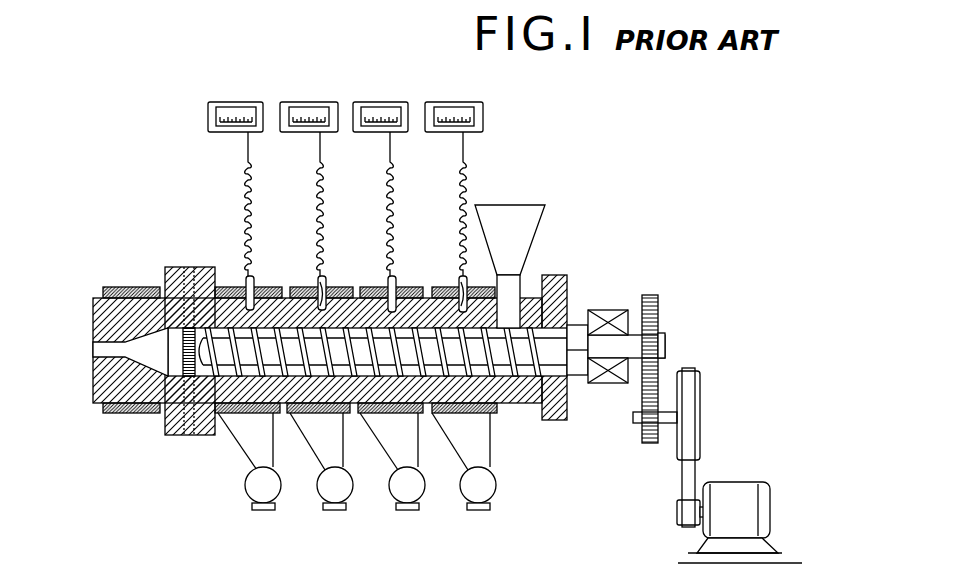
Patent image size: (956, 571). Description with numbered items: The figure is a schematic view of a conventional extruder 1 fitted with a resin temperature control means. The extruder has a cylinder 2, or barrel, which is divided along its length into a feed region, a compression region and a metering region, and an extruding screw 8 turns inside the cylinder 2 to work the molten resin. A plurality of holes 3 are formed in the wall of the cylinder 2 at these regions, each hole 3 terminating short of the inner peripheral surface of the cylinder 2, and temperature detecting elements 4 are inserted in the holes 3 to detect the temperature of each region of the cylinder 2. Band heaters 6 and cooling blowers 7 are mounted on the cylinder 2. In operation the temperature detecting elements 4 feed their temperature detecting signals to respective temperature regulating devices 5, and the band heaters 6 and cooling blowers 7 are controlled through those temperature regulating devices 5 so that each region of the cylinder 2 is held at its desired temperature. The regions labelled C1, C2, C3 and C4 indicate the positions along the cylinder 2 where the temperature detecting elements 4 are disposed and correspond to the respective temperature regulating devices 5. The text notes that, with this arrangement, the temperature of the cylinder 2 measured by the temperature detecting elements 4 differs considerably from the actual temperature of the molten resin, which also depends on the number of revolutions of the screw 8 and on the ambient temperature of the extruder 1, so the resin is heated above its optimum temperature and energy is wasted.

The extruder 1 is at (344, 348).
The cylinder 2 is at (567, 293).
The holes 3 is at (322, 276).
The temperature detecting elements 4 is at (252, 276).
The temperature regulating devices 5 is at (343, 175).
The band heaters 6 is at (233, 287).
The cooling blowers 7 is at (278, 498).
The extruding screw 8 is at (198, 300).
The controller C1 is at (454, 175).
The region C2 is at (380, 175).
The region C3 is at (309, 175).
The region C4 is at (235, 175).